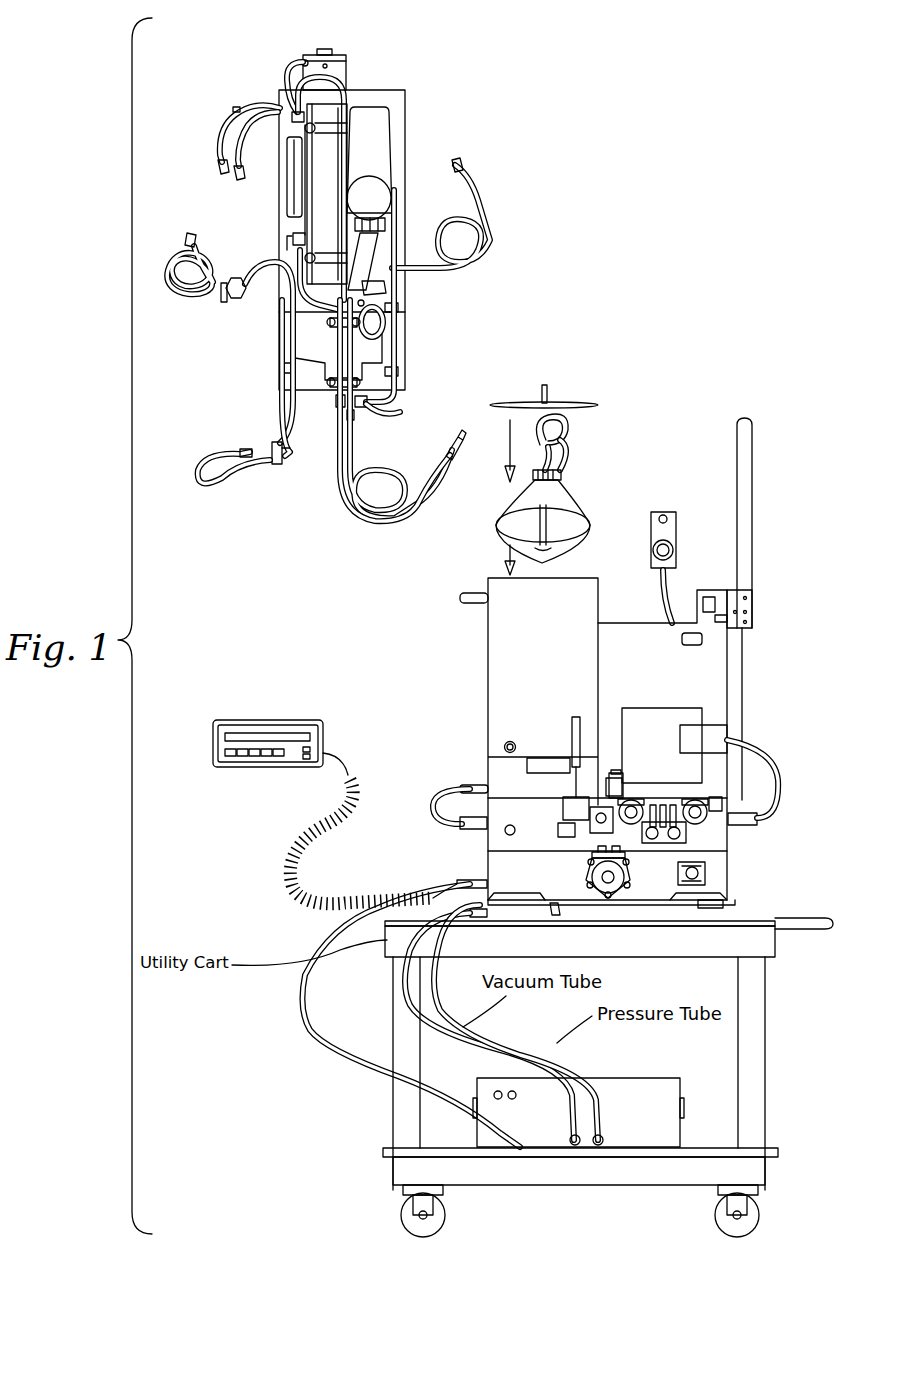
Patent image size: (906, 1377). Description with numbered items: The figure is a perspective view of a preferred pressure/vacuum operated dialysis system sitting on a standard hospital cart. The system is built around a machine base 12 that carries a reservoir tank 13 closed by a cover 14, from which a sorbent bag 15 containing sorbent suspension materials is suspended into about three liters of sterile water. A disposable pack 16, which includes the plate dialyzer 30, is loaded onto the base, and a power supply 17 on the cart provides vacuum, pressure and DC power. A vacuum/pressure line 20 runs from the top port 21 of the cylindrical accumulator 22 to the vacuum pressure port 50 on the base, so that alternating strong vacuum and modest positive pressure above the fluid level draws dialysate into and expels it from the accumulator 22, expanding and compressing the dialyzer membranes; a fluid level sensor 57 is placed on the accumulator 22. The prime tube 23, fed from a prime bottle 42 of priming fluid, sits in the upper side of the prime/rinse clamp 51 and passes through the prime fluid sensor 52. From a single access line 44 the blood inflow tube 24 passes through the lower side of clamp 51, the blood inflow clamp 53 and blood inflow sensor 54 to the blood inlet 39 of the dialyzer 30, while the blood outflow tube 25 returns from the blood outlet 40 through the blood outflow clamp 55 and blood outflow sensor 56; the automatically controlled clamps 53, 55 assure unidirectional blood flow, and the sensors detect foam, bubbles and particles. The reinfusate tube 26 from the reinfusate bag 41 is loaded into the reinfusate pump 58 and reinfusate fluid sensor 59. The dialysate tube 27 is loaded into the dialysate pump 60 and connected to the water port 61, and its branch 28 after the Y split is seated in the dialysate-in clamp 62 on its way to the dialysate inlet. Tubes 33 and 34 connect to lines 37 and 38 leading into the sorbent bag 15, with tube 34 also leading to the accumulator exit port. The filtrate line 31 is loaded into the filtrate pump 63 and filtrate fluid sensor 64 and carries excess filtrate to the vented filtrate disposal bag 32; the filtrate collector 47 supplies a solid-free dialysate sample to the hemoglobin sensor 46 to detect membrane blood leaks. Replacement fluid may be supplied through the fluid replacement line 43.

The machine base 12 is at (727, 885).
The reservoir tank 13 is at (488, 640).
The cover 14 is at (568, 400).
The sorbent bag 15 is at (580, 505).
The disposable pack 16 is at (297, 92).
The power supply 17 is at (680, 1130).
The vacuum/pressure line 20 is at (285, 72).
The top port 21 is at (303, 60).
The accumulator 22 is at (348, 72).
The prime tube 23 is at (395, 412).
The blood inflow tube 24 is at (352, 452).
The blood outflow tube 25 is at (345, 520).
The reinfusate tube 26 is at (382, 398).
The dialysate tube 27 is at (228, 487).
The branch of dialysate tube 28 is at (268, 448).
The dialyzer 30 is at (330, 110).
The filtrate line 31 is at (178, 292).
The filtrate disposal bag 32 is at (290, 222).
The tube 33 is at (235, 115).
The tube 34 is at (243, 143).
The line 37 is at (575, 425).
The line 38 is at (568, 447).
The blood inlet 39 is at (295, 116).
The blood outlet 40 is at (284, 247).
The reinfusate bag 41 is at (286, 203).
The prime bottle 42 is at (392, 135).
The fluid replacement line 43 is at (448, 285).
The single access line 44 is at (455, 458).
The hemoglobin sensor 46 is at (222, 298).
The filtrate collector 47 is at (238, 302).
The vacuum pressure port 50 is at (614, 775).
The prime/rinse clamp 51 is at (706, 872).
The prime fluid sensor 52 is at (716, 800).
The blood inflow clamp 53 is at (690, 836).
The blood inflow sensor 54 is at (648, 810).
The blood outflow clamp 55 is at (487, 881).
The blood outflow sensor 56 is at (665, 808).
The fluid level sensor 57 is at (678, 515).
The reinfusate pump 58 is at (760, 818).
The reinfusate fluid sensor 59 is at (695, 805).
The dialysate pump 60 is at (617, 892).
The water port 61 is at (505, 747).
The dialysate-in clamp 62 is at (527, 764).
The filtrate pump 63 is at (600, 810).
The filtrate fluid sensor 64 is at (623, 795).